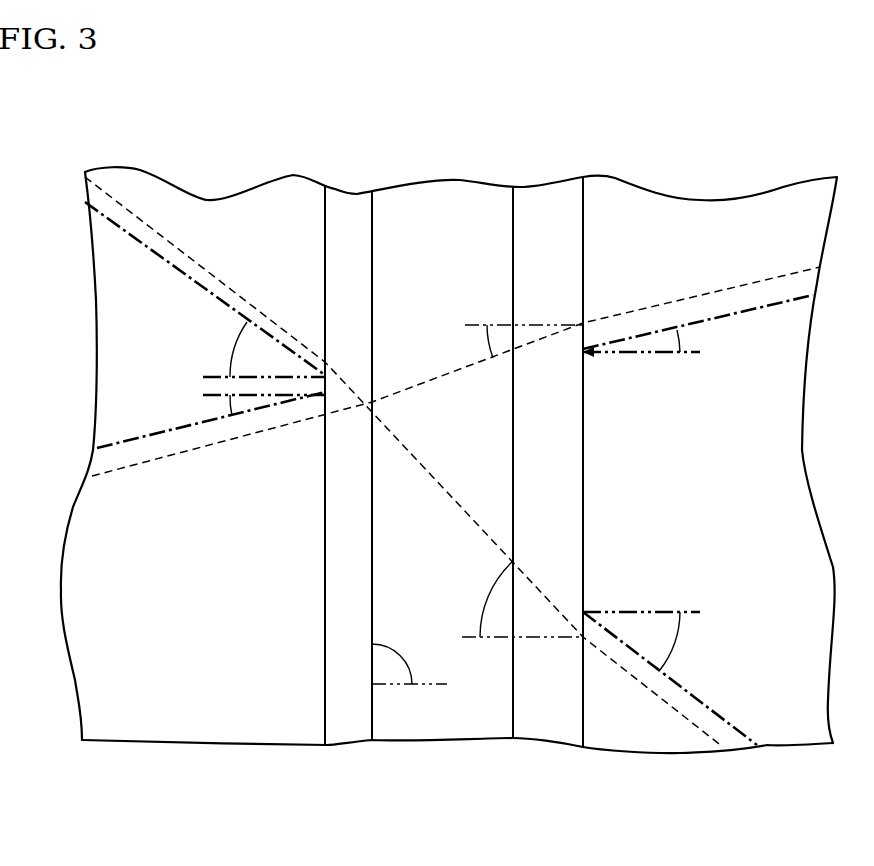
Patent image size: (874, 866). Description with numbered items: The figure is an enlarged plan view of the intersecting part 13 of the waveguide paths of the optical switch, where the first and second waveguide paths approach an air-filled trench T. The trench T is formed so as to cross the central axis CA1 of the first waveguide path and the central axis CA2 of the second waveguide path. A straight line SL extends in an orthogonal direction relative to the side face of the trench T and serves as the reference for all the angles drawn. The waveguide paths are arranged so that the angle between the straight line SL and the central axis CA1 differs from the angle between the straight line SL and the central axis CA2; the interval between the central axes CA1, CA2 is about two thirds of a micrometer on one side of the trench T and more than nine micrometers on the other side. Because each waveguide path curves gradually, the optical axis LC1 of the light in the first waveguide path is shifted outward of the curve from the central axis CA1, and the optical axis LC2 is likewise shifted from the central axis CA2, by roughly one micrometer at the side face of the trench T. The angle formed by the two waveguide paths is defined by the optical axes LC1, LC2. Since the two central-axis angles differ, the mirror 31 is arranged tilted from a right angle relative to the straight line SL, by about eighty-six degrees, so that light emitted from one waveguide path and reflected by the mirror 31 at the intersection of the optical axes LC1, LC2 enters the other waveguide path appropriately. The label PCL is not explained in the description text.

The intersecting part 13 is at (280, 552).
The mirror 31 is at (515, 685).
The trench T is at (547, 220).
The pixel / panel boundary line PCL is at (672, 753).
The optical axis of the first waveguide path LC1 is at (418, 456).
The optical axis of the second waveguide path LC2 is at (418, 383).
The central axis of the first waveguide path CA1 is at (203, 285).
The central axis of the second waveguide path CA2 is at (168, 432).
The straight line SL is at (210, 394).